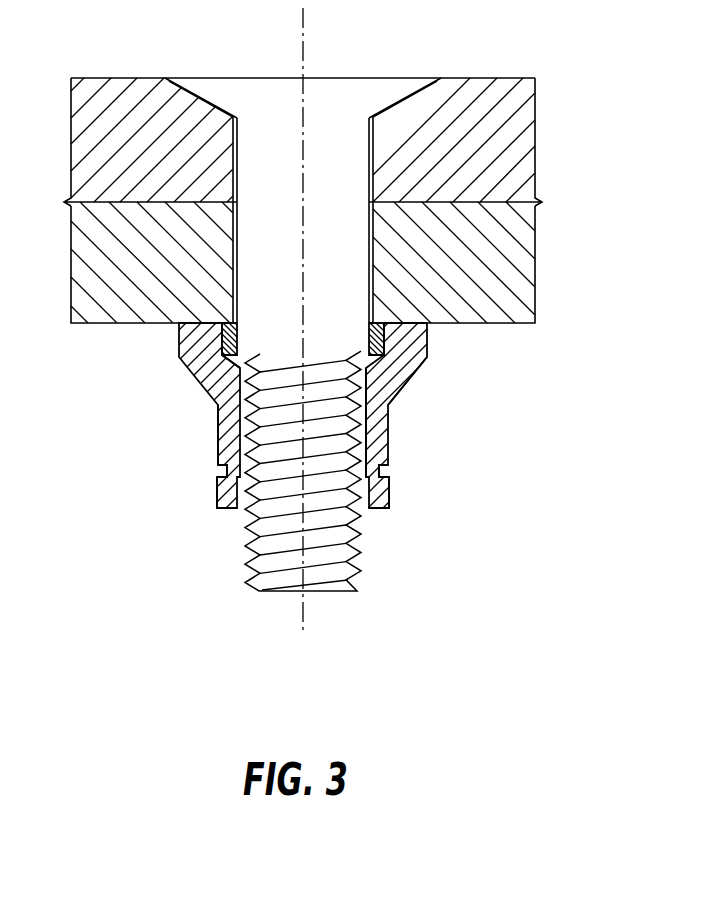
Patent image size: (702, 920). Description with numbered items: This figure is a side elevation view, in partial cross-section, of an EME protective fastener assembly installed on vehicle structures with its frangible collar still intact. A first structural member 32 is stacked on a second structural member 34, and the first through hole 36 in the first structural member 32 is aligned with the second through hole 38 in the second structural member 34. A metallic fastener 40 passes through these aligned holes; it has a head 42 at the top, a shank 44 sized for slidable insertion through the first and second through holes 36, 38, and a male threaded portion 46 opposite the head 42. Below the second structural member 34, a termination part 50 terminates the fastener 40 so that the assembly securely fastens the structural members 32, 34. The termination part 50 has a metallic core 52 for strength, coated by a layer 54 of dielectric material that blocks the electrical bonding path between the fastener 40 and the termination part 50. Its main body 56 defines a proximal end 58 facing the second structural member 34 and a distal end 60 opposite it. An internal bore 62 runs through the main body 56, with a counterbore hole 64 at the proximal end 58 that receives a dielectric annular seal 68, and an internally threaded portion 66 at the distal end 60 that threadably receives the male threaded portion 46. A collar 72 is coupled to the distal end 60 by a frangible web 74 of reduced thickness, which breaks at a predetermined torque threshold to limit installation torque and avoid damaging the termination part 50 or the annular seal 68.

The first structural member 32 is at (498, 138).
The second structural member 34 is at (498, 268).
The first through hole 36 is at (233, 149).
The second through hole 38 is at (233, 250).
The fastener 40 is at (334, 156).
The head 42 is at (238, 90).
The shank 44 is at (255, 282).
The male threaded portion 46 is at (358, 575).
The termination part 50 is at (420, 411).
The core 52 is at (416, 343).
The layer of dielectric material 54 is at (418, 375).
The main body 56 is at (205, 415).
The proximal end 58 is at (405, 323).
The distal end 60 is at (218, 440).
The internal bore 62 is at (355, 429).
The counterbore hole 64 is at (222, 355).
The internally threaded portion 66 is at (352, 456).
The annular seal 68 is at (228, 334).
The collar 72 is at (207, 495).
The frangible web 74 is at (218, 473).